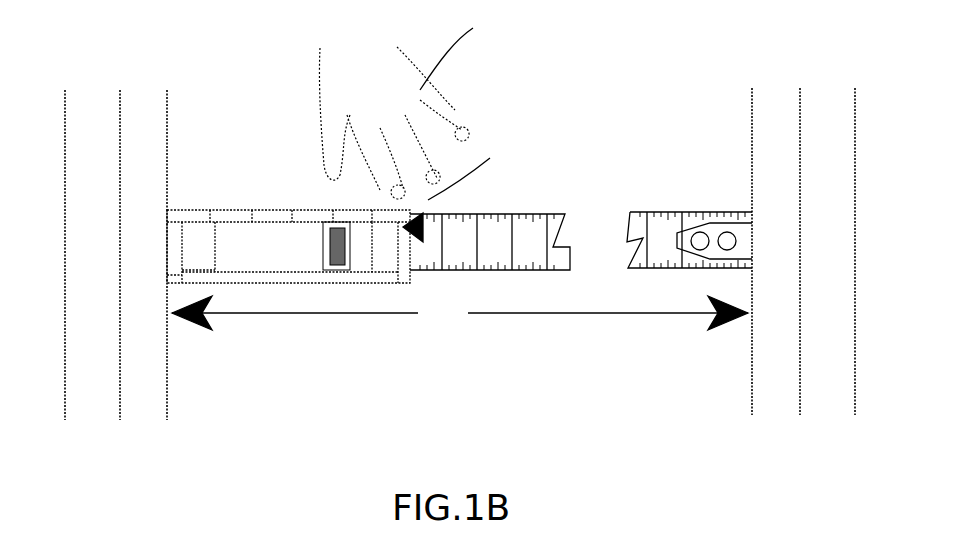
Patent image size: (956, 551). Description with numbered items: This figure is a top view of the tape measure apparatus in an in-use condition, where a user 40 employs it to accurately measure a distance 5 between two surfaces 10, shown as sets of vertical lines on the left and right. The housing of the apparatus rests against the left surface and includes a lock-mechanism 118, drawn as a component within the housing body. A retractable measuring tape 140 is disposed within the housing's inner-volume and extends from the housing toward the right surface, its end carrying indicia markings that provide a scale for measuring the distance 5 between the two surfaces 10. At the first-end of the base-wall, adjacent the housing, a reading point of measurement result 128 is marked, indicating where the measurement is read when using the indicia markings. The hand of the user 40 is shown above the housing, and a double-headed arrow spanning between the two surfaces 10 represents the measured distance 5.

The surfaces 10 is at (160, 148).
The user 40 is at (418, 90).
The lock-mechanism 118 is at (330, 215).
The reading point of measurement result 128 is at (405, 215).
The retractable measuring tape 140 is at (647, 212).
The distance 5 is at (460, 314).